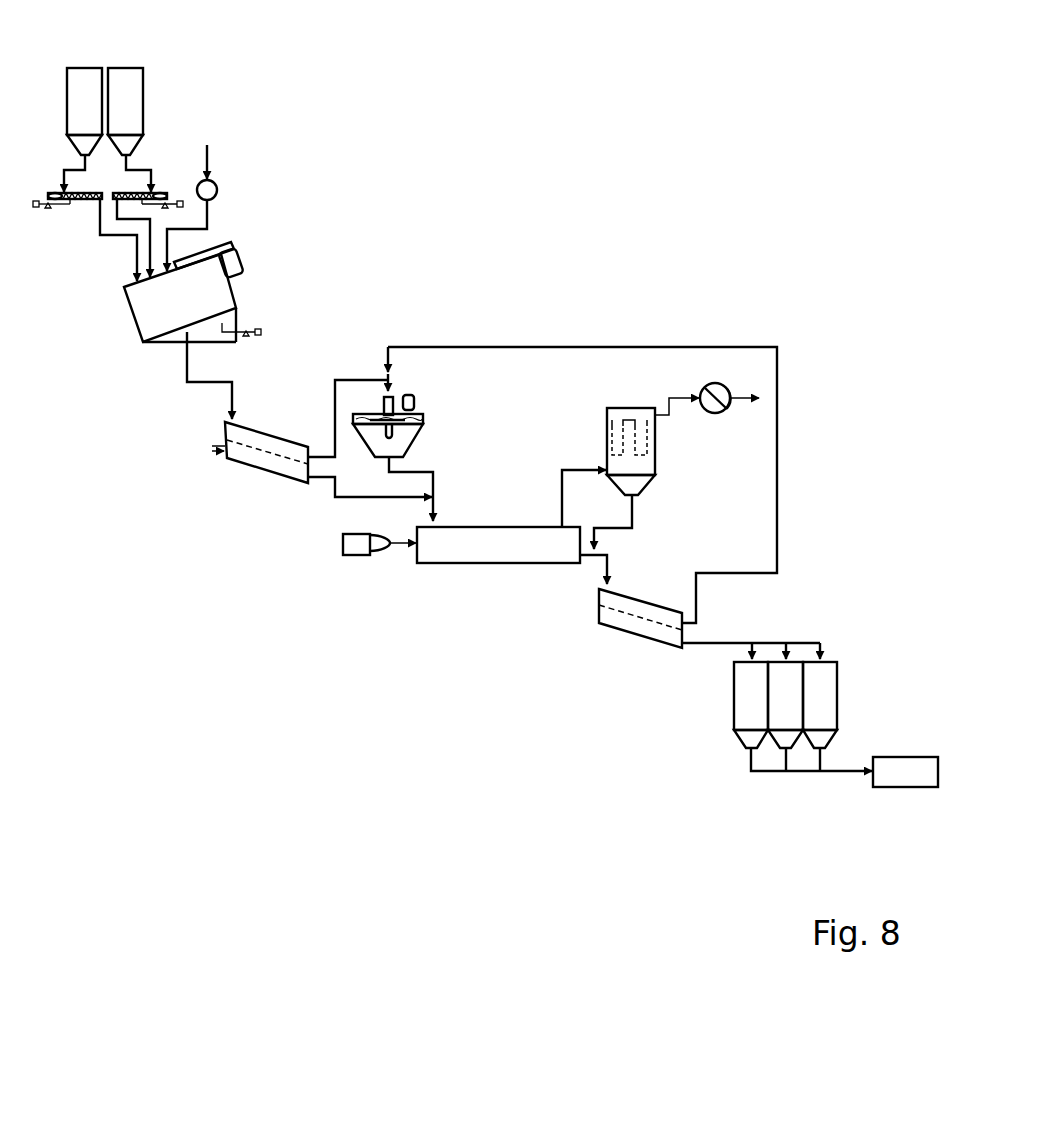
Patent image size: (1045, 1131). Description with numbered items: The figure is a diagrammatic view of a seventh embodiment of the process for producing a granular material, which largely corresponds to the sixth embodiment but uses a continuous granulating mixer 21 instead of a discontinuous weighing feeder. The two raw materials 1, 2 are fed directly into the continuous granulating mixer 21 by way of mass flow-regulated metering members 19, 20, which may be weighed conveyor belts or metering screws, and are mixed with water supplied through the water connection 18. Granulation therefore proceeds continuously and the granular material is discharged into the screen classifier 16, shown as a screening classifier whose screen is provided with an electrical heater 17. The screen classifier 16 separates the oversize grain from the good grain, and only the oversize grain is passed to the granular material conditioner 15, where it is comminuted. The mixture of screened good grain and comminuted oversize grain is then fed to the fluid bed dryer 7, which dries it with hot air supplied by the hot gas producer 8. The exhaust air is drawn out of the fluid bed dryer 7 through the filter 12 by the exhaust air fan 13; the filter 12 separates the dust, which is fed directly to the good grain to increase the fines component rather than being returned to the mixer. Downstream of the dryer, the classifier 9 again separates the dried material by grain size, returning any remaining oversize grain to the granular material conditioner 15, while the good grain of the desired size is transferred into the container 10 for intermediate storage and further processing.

The raw material 1 is at (84, 70).
The raw material 2 is at (128, 70).
The fluid bed dryer 7 is at (490, 557).
The hot gas producer 8 is at (358, 550).
The classifier 9 is at (635, 627).
The container 10 is at (827, 715).
The filter 12 is at (640, 463).
The exhaust air fan 13 is at (717, 382).
The granular material conditioner 15 is at (397, 448).
The screen classifier 16 is at (288, 468).
The electrical heater 17 is at (215, 452).
The water connection 18 is at (215, 183).
The metering member 19 is at (82, 200).
The metering member 20 is at (131, 201).
The continuous granulating mixer 21 is at (150, 317).